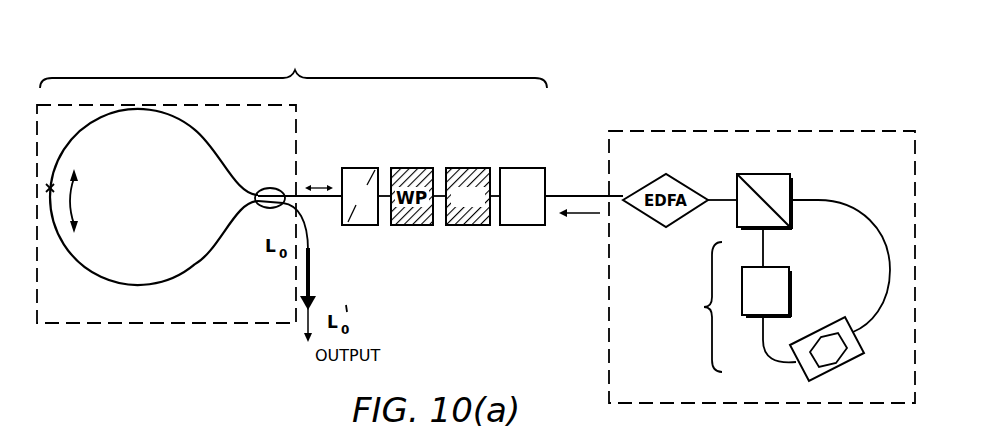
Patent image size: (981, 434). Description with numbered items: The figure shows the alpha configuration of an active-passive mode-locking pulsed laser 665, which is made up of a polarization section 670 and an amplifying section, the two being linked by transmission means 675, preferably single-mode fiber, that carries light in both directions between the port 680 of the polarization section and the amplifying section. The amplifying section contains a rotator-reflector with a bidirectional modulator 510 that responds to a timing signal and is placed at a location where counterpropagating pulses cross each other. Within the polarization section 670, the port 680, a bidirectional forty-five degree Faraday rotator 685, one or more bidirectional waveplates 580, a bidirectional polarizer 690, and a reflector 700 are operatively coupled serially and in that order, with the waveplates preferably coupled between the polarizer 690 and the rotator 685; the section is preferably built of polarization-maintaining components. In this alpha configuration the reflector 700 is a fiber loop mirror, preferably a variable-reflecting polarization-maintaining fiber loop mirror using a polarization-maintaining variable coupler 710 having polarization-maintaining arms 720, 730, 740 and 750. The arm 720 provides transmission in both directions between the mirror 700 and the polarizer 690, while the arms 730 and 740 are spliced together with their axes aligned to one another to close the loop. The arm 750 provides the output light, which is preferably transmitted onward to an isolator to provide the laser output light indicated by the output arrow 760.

The active-passive mode-locking pulsed laser 665 is at (477, 54).
The polarization section 670 is at (293, 62).
The reflector 700 is at (147, 316).
The polarization-maintaining arm 730 is at (176, 118).
The polarization-maintaining arm 740 is at (160, 284).
The polarization-maintaining variable coupler 710 is at (270, 208).
The polarization-maintaining arm 720 is at (298, 195).
The polarization-maintaining arm 750 is at (311, 238).
The output beam 760 is at (308, 265).
The bidirectional polarizer 690 is at (346, 226).
The bidirectional waveplate 580 is at (449, 226).
The rotator 685 is at (516, 227).
The transmission means 675 is at (575, 195).
The port 680 is at (546, 201).
The bidirectional modulator 510 is at (797, 339).